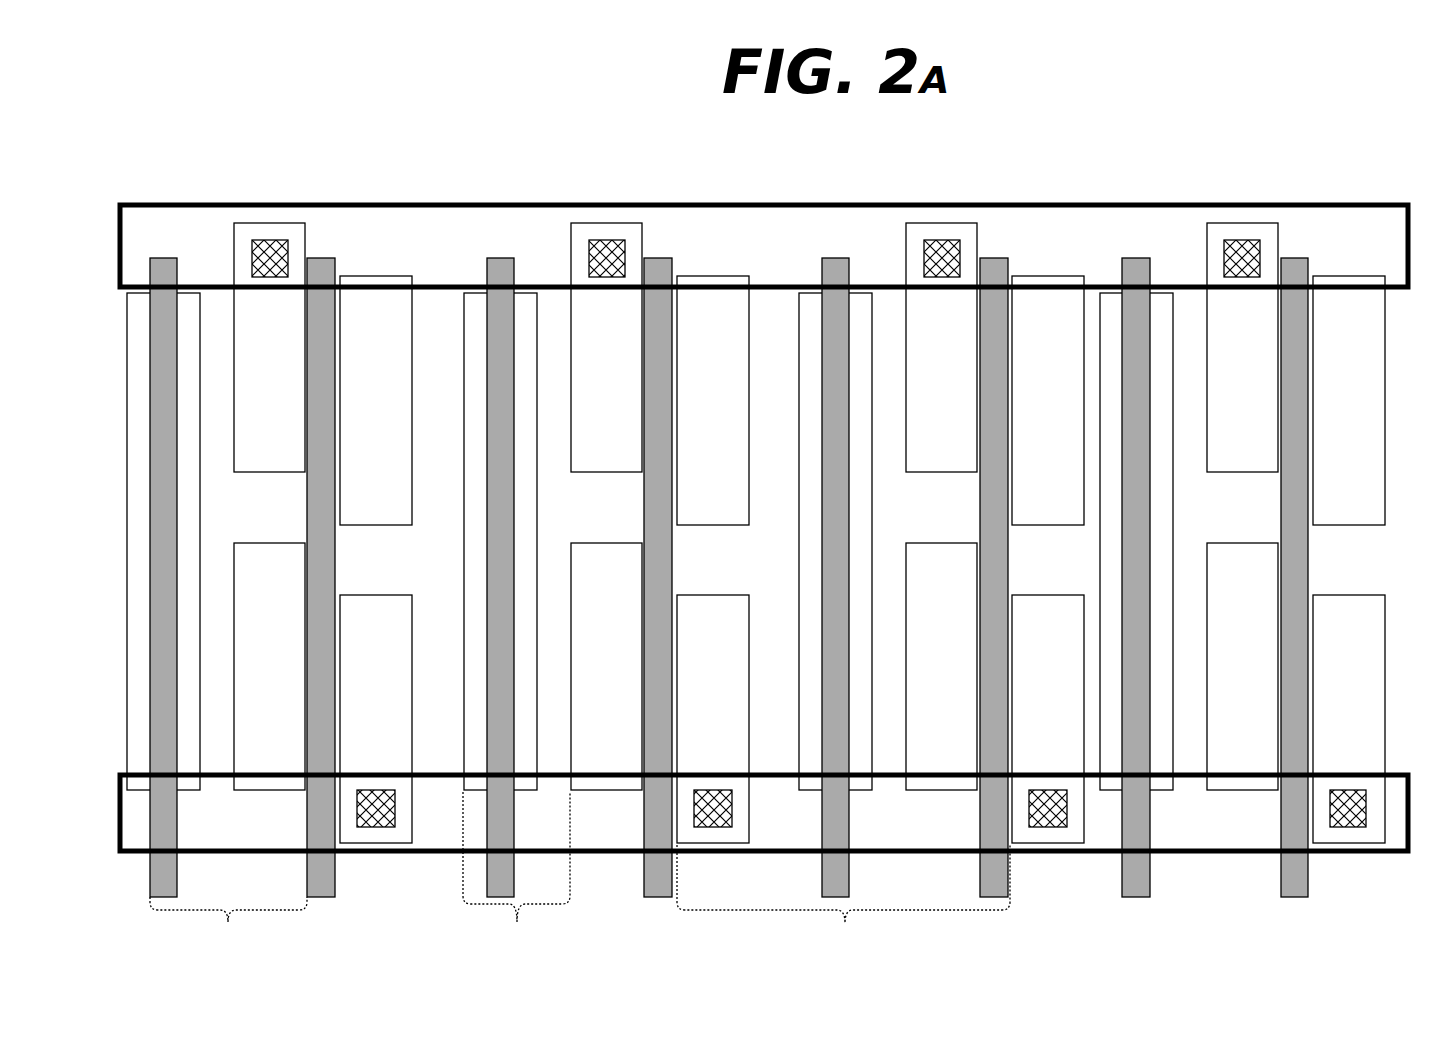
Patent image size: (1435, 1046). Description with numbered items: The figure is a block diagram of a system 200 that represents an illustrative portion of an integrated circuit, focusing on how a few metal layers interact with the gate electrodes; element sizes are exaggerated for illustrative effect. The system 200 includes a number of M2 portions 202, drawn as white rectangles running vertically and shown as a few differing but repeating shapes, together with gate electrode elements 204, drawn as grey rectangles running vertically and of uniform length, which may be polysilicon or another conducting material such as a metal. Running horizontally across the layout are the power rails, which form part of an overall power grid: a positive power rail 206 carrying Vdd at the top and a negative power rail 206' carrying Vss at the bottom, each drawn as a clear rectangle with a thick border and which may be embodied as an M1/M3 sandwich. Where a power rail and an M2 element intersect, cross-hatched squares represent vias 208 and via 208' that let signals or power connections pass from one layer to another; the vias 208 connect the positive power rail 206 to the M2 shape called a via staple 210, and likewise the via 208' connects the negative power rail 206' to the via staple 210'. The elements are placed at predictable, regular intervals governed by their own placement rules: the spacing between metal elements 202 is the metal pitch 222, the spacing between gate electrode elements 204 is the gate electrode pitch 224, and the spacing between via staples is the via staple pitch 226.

The system 200 is at (1372, 95).
The M2 portions 202 is at (711, 276).
The gate electrode elements 204 is at (848, 258).
The positive power rail 206 is at (764, 211).
The negative power rail 206' is at (764, 848).
The vias 208 is at (1285, 206).
The via 208' is at (1381, 859).
The via staple 210 is at (1259, 287).
The via staple 210' is at (1355, 780).
The metal pitch 222 is at (516, 872).
The gate electrode pitch 224 is at (228, 925).
The via staple pitch 226 is at (843, 898).